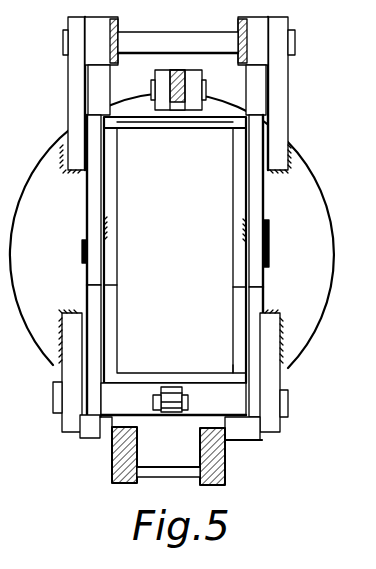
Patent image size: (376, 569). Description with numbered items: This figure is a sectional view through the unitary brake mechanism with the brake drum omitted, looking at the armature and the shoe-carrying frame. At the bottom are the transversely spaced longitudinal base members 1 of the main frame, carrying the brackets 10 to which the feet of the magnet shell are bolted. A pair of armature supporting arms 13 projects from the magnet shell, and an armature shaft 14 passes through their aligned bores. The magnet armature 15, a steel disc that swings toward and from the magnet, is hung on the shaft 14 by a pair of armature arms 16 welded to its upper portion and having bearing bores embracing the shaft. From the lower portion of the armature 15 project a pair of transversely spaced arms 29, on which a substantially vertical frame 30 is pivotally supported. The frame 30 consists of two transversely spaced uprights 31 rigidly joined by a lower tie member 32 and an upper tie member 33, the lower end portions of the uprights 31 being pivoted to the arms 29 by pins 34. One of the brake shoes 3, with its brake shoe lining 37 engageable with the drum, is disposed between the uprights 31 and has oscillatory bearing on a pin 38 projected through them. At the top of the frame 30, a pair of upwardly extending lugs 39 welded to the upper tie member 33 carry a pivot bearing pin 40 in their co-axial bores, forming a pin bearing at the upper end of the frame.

The longitudinal base member 1 is at (112, 462).
The brake shoe 3 is at (182, 128).
The bracket 10 is at (80, 438).
The armature supporting arm 13 is at (105, 88).
The armature shaft 14 is at (208, 42).
The magnet armature 15 is at (330, 237).
The armature arm 16 is at (68, 100).
The arm 29 is at (62, 372).
The frame 30 is at (265, 196).
The upright 31 is at (87, 280).
The lower tie member 32 is at (236, 378).
The upper tie member 33 is at (220, 118).
The pin 34 is at (200, 403).
The brake shoe lining 37 is at (138, 130).
The pin 38 is at (270, 256).
The lug 39 is at (162, 70).
The pivot bearing pin 40 is at (202, 88).